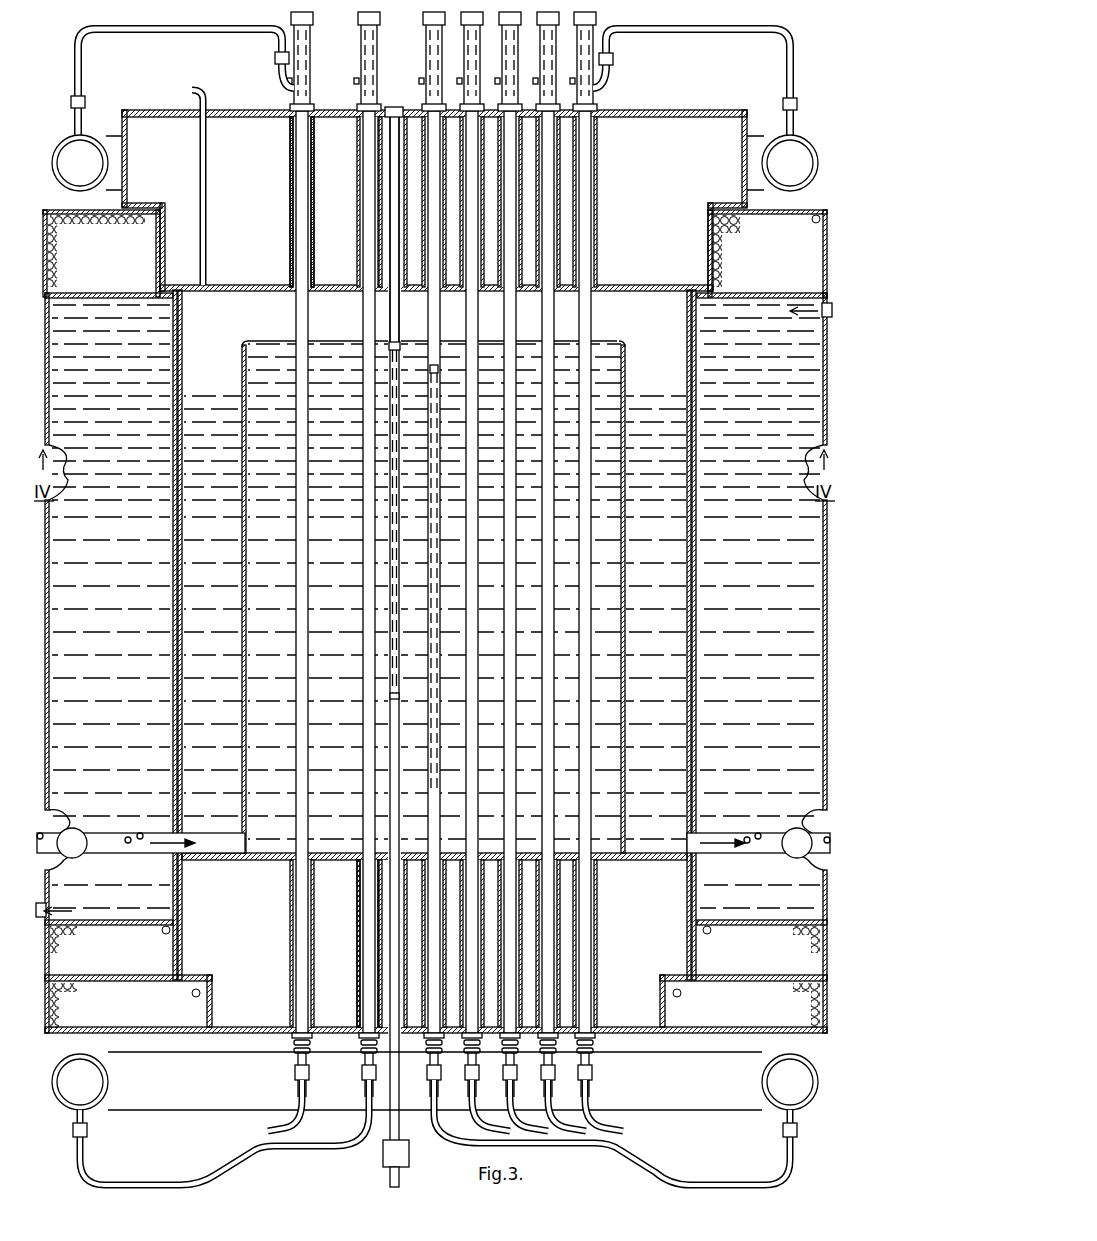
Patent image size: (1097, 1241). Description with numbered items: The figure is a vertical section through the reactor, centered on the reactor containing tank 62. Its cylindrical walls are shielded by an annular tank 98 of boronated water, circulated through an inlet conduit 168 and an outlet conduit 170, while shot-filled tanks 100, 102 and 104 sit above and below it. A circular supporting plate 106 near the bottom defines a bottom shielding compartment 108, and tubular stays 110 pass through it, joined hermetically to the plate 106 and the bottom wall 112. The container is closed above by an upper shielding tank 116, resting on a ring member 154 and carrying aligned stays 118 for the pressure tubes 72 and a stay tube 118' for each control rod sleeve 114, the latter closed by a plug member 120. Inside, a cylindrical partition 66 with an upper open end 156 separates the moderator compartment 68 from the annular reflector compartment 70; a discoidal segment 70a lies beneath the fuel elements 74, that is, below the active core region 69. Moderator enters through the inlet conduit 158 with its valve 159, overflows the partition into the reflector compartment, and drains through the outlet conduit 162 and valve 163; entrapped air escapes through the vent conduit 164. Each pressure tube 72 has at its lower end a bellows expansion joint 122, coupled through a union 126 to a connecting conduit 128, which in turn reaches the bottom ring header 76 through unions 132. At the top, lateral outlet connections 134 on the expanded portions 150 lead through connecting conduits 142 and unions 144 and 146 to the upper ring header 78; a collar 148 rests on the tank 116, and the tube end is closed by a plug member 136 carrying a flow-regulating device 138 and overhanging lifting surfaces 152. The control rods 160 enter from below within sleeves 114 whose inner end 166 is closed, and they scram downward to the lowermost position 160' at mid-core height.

The reactor containing tank 62 is at (690, 812).
The partition 66 is at (626, 365).
The moderator compartment 68 is at (615, 486).
The active core region 69 is at (530, 678).
The reflector compartment 70 is at (462, 313).
The horizontal discoidal segment 70a is at (372, 858).
The pressure tube 72 is at (470, 338).
The fuel element 74 is at (438, 585).
The ring header 76 is at (718, 1062).
The upper ring header 78 is at (762, 138).
The annular tank 98 is at (54, 645).
The shielding tank 100 is at (158, 228).
The shielding tank 102 is at (175, 948).
The shielding tank 104 is at (210, 1005).
The supporting plate 106 is at (635, 866).
The bottom shielding compartment 108 is at (650, 1040).
The tubular stay 110 is at (380, 950).
The bottom wall 112 is at (648, 1033).
The control rod sleeve 114 is at (401, 350).
The upper shielding tank 116 is at (658, 110).
The tubular stay 118 is at (325, 202).
The stay tube 118' is at (363, 572).
The plug member 120 is at (396, 107).
The expansion joint 122 is at (362, 1058).
The union 126 is at (440, 1072).
The connecting conduit 128 is at (655, 1172).
The union 132 is at (88, 1130).
The outlet connection 134 is at (280, 86).
The plug member 136 is at (380, 20).
The flow-regulating device 138 is at (380, 60).
The connecting conduit 142 is at (748, 40).
The union 144 is at (275, 57).
The union 146 is at (85, 102).
The collar 148 is at (312, 111).
The expanded end portion 150 is at (365, 285).
The overhanging lateral surface 152 is at (596, 18).
The ring member 154 is at (172, 290).
The upper open end 156 is at (255, 333).
The inlet conduit 158 is at (112, 850).
The valve 159 is at (78, 830).
The control rod 160 is at (364, 652).
The lowermost control rod position 160' is at (358, 524).
The outlet conduit 162 is at (770, 833).
The valve 163 is at (790, 853).
The vent conduit 164 is at (207, 163).
The inner end 166 is at (378, 125).
The inlet conduit 168 is at (808, 297).
The outlet conduit 170 is at (50, 906).